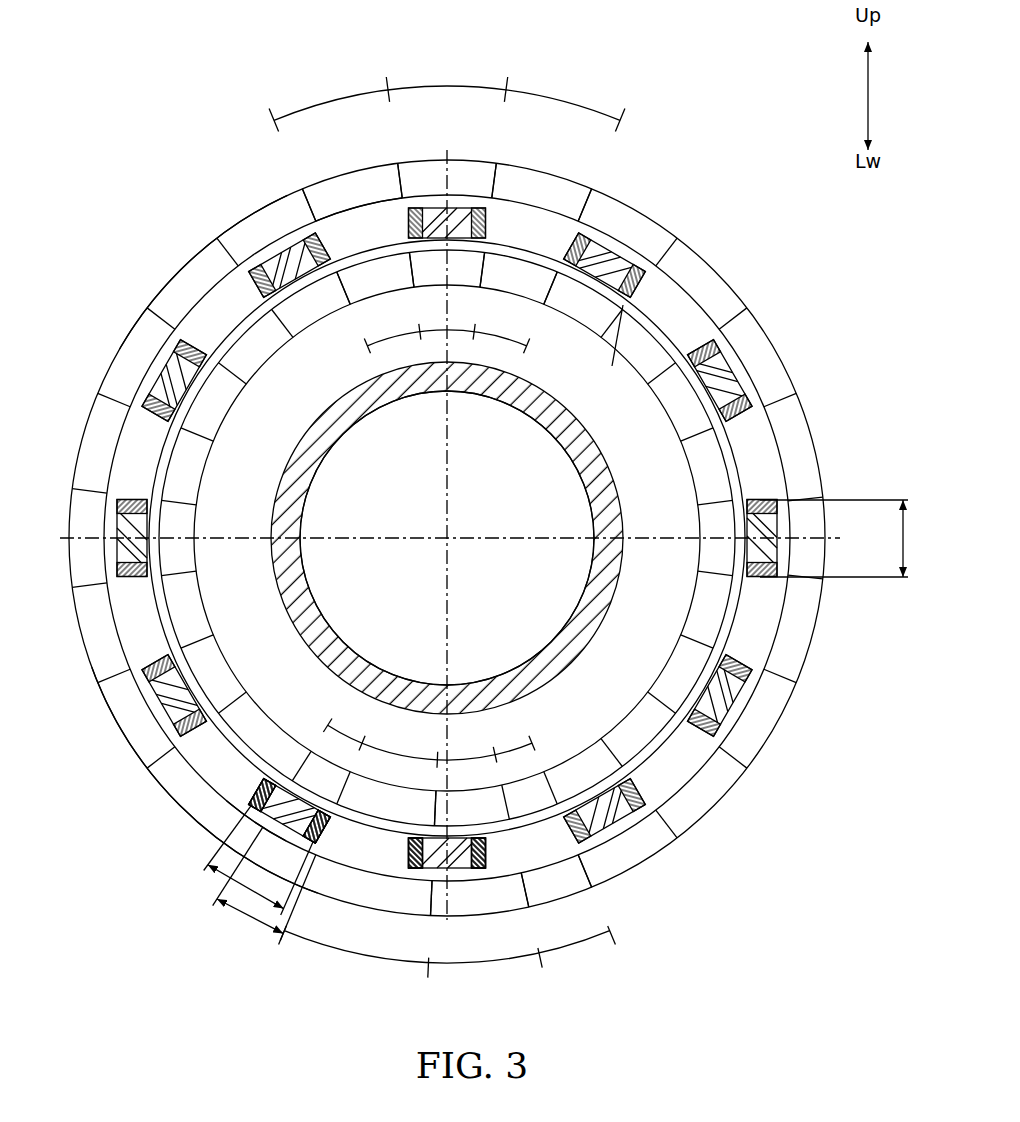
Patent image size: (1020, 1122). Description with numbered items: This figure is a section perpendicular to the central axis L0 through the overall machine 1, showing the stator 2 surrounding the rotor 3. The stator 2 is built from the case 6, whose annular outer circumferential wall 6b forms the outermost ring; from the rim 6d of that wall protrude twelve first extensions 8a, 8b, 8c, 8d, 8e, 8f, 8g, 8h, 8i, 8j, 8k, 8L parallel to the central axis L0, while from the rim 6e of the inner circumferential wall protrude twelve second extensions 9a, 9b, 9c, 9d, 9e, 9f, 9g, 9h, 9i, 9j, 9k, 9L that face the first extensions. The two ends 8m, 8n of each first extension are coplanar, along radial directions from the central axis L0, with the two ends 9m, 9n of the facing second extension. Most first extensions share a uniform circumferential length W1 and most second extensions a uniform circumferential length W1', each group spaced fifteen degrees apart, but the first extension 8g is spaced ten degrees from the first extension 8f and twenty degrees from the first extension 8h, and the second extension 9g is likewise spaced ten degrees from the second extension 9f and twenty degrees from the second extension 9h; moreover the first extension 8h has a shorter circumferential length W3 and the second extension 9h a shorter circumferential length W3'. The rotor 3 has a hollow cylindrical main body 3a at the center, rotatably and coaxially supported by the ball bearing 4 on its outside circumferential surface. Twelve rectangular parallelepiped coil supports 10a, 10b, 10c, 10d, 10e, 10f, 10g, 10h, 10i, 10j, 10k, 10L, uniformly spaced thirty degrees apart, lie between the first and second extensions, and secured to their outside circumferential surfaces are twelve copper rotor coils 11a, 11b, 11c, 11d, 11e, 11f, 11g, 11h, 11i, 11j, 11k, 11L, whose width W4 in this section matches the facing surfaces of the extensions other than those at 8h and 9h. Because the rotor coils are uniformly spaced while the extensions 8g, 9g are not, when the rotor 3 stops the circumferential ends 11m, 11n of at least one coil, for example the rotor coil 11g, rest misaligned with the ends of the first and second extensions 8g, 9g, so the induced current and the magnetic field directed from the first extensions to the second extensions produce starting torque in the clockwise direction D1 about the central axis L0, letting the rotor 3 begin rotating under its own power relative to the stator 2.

The rotating electric machine 1 is at (116, 50).
The stator 2 is at (806, 396).
The rotor 3 is at (768, 598).
The main body 3a is at (545, 428).
The ball bearing 4 is at (660, 297).
The case 6 is at (160, 790).
The outer circumferential wall 6b is at (200, 240).
The rim of outer circumferential wall 6d is at (393, 180).
The rim of inner circumferential wall 6e is at (360, 297).
The first extension 8a is at (460, 172).
The first extension 8b is at (645, 228).
The first extension 8c is at (776, 360).
The first extension 8d is at (812, 521).
The first extension 8e is at (760, 727).
The first extension 8f is at (662, 850).
The first extension 8g is at (466, 905).
The first extension 8h is at (300, 897).
The first extension 8i is at (126, 731).
The first extension 8j is at (86, 558).
The first extension 8k is at (127, 357).
The first extension 8L is at (268, 212).
The end of first extension 8m is at (495, 178).
The end of first extension 8n is at (385, 175).
The second extension 9a is at (467, 274).
The second extension 9b is at (577, 305).
The second extension 9c is at (672, 390).
The second extension 9d is at (702, 518).
The second extension 9e is at (667, 662).
The second extension 9f is at (578, 740).
The second extension 9g is at (460, 800).
The second extension 9h is at (311, 760).
The second extension 9i is at (235, 665).
The second extension 9j is at (187, 520).
The second extension 9k is at (217, 408).
The second extension 9L is at (300, 313).
The end of second extension 9m is at (482, 262).
The end of second extension 9n is at (405, 277).
The coil support 10a is at (467, 216).
The coil support 10b is at (600, 250).
The coil support 10c is at (748, 362).
The coil support 10d is at (780, 520).
The coil support 10e is at (740, 690).
The coil support 10f is at (620, 830).
The coil support 10g is at (490, 858).
The coil support 10h is at (318, 846).
The coil support 10i is at (172, 696).
The coil support 10j is at (118, 526).
The coil support 10k is at (185, 345).
The coil support 10L is at (267, 293).
The rotor coil 11a is at (487, 221).
The rotor coil 11b is at (577, 250).
The rotor coil 11c is at (725, 356).
The rotor coil 11d is at (778, 505).
The rotor coil 11e is at (745, 668).
The rotor coil 11f is at (640, 790).
The rotor coil 11g is at (500, 830).
The rotor coil 11h is at (333, 830).
The rotor coil 11i is at (168, 677).
The rotor coil 11j is at (118, 506).
The rotor coil 11k is at (187, 357).
The rotor coil 11L is at (260, 283).
The end of rotor coil 11m is at (262, 797).
The end of rotor coil 11n is at (327, 833).
The central axis L0 is at (459, 538).
The clockwise direction D1 is at (390, 565).
The circumferential length W1 is at (447, 527).
The circumferential length W1' is at (429, 537).
The circumferential length W3 is at (258, 886).
The circumferential length W3' is at (330, 755).
The width W4 is at (542, 708).